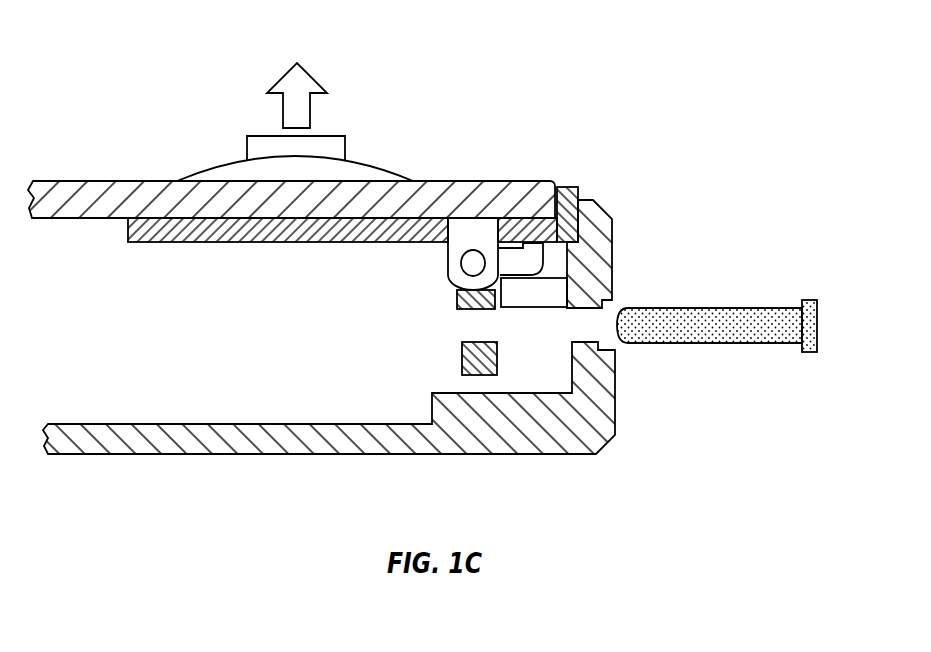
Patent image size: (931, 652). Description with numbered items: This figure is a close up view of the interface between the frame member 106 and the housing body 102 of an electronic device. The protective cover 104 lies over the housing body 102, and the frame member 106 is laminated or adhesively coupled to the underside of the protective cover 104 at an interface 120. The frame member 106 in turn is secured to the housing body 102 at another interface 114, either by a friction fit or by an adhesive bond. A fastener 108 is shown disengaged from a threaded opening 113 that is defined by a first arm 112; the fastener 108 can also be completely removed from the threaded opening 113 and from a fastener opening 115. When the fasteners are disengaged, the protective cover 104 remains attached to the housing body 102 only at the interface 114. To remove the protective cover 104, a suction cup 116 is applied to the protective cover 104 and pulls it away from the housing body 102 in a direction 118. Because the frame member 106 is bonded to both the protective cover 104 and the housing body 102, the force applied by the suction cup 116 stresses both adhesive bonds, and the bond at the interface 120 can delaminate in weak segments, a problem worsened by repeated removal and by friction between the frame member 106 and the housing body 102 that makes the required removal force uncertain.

The housing body 102 is at (568, 439).
The protective cover 104 is at (53, 270).
The frame member 106 is at (145, 242).
The fastener 108 is at (725, 343).
The first arm 112 is at (462, 357).
The threaded opening 113 is at (452, 319).
The interface 114 is at (602, 245).
The fastener opening 115 is at (570, 328).
The suction cup 116 is at (345, 140).
The direction 118 is at (287, 85).
The interface 120 is at (518, 227).